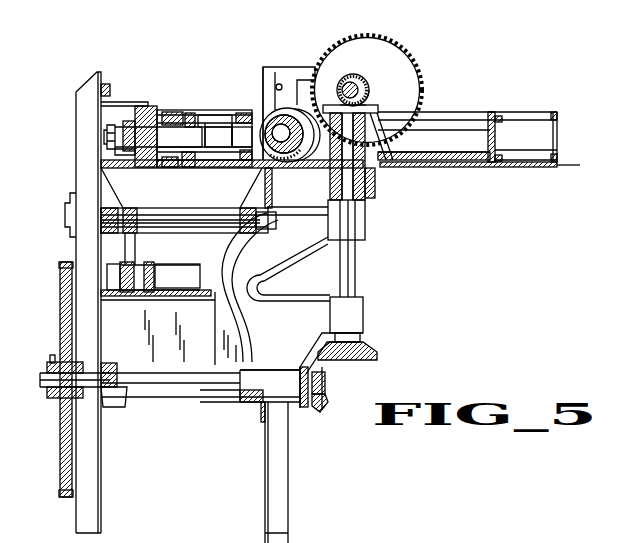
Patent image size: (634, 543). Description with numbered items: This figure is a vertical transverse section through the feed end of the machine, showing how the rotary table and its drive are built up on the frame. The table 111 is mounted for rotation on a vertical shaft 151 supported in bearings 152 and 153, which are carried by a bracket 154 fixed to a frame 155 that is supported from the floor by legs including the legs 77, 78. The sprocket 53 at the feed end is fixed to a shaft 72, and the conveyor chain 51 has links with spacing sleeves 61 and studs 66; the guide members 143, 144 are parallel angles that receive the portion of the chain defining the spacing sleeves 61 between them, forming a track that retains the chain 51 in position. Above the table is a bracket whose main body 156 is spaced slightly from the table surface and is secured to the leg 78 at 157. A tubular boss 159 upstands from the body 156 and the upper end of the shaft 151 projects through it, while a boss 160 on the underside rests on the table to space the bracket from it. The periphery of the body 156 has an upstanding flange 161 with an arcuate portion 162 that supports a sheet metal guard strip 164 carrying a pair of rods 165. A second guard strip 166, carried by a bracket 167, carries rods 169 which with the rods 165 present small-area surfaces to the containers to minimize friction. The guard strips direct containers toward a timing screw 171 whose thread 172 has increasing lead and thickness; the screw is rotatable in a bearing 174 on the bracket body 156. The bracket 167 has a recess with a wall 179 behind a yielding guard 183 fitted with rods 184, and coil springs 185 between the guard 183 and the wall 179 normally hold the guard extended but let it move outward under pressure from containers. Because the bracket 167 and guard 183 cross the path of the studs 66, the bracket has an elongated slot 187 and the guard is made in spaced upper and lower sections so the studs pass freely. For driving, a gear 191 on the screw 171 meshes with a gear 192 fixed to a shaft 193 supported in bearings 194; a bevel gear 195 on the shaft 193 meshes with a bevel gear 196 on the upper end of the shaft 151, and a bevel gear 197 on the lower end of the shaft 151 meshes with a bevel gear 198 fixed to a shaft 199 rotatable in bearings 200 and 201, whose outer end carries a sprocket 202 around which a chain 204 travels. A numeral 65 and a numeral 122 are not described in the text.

The chain 51 is at (116, 129).
The sprocket 53 is at (128, 250).
The spacing sleeves 61 is at (123, 128).
The nut 65 is at (105, 137).
The studs 66 is at (203, 312).
The shaft 72 is at (65, 214).
The leg 77 is at (86, 528).
The leg 78 is at (289, 527).
The table 111 is at (584, 162).
The mounting plate 122 is at (148, 292).
The guide member 143 is at (118, 126).
The guide member 144 is at (125, 151).
The vertical shaft 151 is at (357, 262).
The bearing 152 is at (366, 216).
The bearing 153 is at (364, 316).
The bracket 154 is at (232, 262).
The frame 155 is at (255, 208).
The main body of bracket 156 is at (447, 135).
The securing point 157 is at (316, 55).
The tubular boss 159 is at (407, 142).
The boss 160 is at (374, 170).
The upstanding flange 161 is at (491, 108).
The arcuate portion 162 is at (464, 106).
The sheet metal strip 164 is at (480, 112).
The rods 165 is at (500, 116).
The guard strip 166 is at (560, 137).
The bracket 167 is at (190, 113).
The rods 169 is at (242, 113).
The timing element 171 is at (300, 122).
The thread 172 is at (262, 100).
The bearing 174 is at (330, 165).
The wall 179 is at (208, 115).
The guard 183 is at (217, 125).
The rods 184 is at (247, 136).
The coil springs 185 is at (218, 110).
The elongated slot 187 is at (172, 112).
The gear 191 is at (340, 105).
The gear 192 is at (410, 55).
The shaft 193 is at (352, 74).
The bearings 194 is at (372, 94).
The bevel gear 195 is at (370, 88).
The bevel gear 196 is at (380, 112).
The bevel gear 197 is at (378, 355).
The bevel gear 198 is at (328, 404).
The shaft 199 is at (216, 402).
The bearing 200 is at (282, 374).
The bearing 201 is at (130, 358).
The sprocket 202 is at (62, 412).
The chain 204 is at (62, 264).